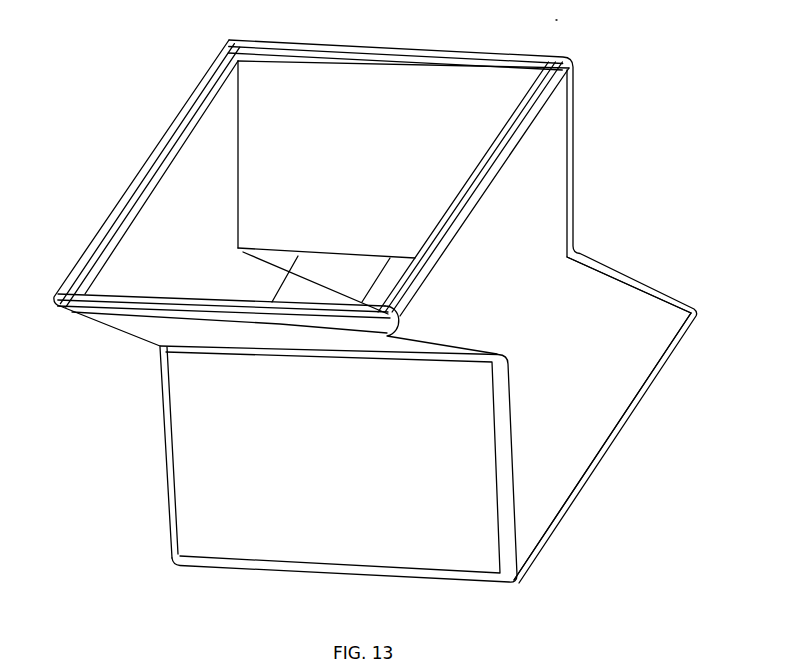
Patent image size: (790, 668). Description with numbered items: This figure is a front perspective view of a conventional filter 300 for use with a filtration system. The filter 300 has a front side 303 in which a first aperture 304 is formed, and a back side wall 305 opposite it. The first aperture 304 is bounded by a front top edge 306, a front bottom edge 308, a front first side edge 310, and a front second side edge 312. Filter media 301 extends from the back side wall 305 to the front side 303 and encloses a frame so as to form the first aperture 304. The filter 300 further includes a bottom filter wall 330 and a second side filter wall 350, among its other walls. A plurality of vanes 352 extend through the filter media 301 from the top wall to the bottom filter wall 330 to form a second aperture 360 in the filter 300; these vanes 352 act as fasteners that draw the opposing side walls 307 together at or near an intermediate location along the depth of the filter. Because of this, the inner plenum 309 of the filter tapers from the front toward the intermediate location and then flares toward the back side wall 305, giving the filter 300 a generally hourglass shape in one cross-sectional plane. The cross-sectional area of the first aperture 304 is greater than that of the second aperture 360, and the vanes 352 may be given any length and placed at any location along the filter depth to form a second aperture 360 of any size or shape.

The filter 300 is at (204, 35).
The filter media 301 is at (637, 297).
The front side 303 is at (178, 166).
The first aperture 304 is at (226, 93).
The back side wall 305 is at (612, 461).
The front top edge 306 is at (537, 54).
The opposing side walls 307 is at (257, 62).
The front bottom edge 308 is at (136, 306).
The inner plenum 309 is at (487, 527).
The front first side edge 310 is at (120, 206).
The front second side edge 312 is at (572, 101).
The bottom filter wall 330 is at (172, 496).
The second side filter wall 350 is at (567, 223).
The vanes 352 is at (287, 288).
The second aperture 360 is at (335, 287).